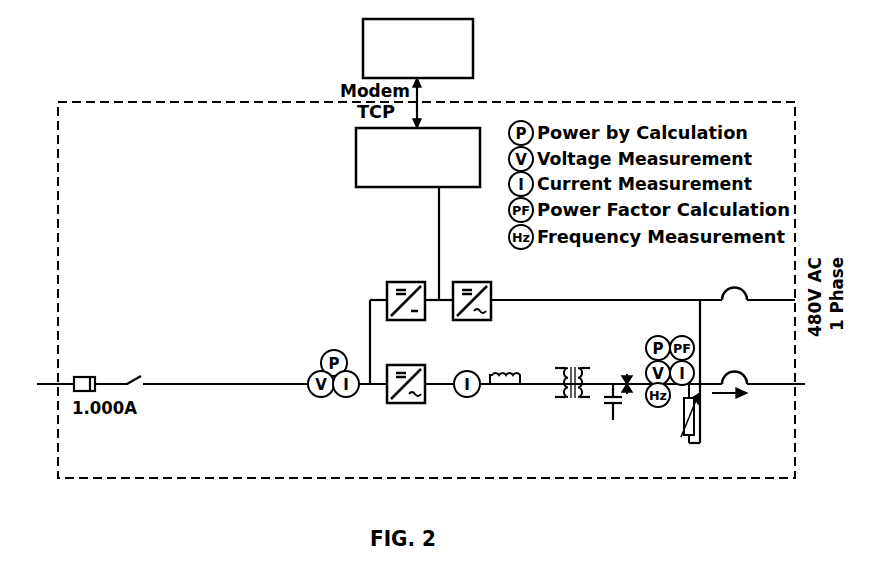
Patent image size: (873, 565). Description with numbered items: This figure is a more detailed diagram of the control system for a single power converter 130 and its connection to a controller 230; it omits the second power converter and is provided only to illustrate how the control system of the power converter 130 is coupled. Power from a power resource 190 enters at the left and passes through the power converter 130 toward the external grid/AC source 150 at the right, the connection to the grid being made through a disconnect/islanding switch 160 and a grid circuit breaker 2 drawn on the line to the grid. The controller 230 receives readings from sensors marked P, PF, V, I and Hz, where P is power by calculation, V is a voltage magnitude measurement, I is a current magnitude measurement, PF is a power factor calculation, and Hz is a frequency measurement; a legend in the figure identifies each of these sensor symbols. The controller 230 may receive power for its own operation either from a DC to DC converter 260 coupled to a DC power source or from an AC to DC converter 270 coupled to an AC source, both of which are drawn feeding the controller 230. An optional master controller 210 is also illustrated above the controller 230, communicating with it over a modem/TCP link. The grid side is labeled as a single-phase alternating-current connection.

The master controller 210 is at (363, 52).
The controller 230 is at (356, 170).
The DC/DC converter 260 is at (408, 282).
The converter (AC to DC) 270 is at (483, 282).
The power converter 130 is at (408, 403).
The disconnect/islanding switch 160 is at (628, 393).
The power resource 190 is at (37, 385).
The external grid/AC source 150 is at (802, 386).
The grid circuit breaker 2 is at (762, 306).